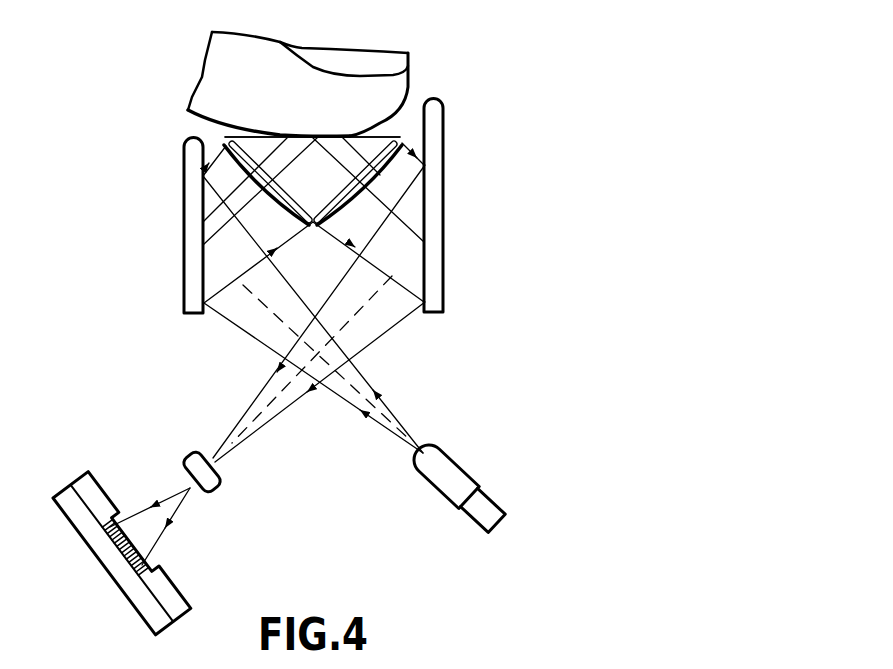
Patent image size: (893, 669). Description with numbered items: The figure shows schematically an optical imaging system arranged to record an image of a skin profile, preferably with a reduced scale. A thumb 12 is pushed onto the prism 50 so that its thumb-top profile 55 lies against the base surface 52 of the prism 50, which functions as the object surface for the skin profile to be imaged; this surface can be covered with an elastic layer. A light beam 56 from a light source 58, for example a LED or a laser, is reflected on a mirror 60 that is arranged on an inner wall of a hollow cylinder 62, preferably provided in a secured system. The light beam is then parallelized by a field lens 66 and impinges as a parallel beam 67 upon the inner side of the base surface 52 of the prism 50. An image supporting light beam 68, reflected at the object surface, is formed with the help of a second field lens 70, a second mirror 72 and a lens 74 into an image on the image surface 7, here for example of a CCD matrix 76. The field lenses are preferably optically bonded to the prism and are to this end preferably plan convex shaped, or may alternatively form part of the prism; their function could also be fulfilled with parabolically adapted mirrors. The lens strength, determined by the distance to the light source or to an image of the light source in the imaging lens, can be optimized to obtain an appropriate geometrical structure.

The thumb 12 is at (222, 72).
The prism 50 is at (337, 147).
The thumb-top profile 55 is at (287, 133).
The base surface 52 is at (262, 140).
The parallel beam 67 is at (277, 183).
The field lens 66 is at (278, 188).
The mirror 60 is at (200, 284).
The hollow cylinder 62 is at (222, 352).
The second mirror 72 is at (432, 143).
The image supporting light beam 68 is at (315, 178).
The second field lens 70 is at (425, 243).
The light source 58 is at (450, 475).
The light beam 56 is at (384, 428).
The lens 74 is at (222, 478).
The CCD matrix 76 is at (115, 553).
The image surface 7 is at (153, 560).